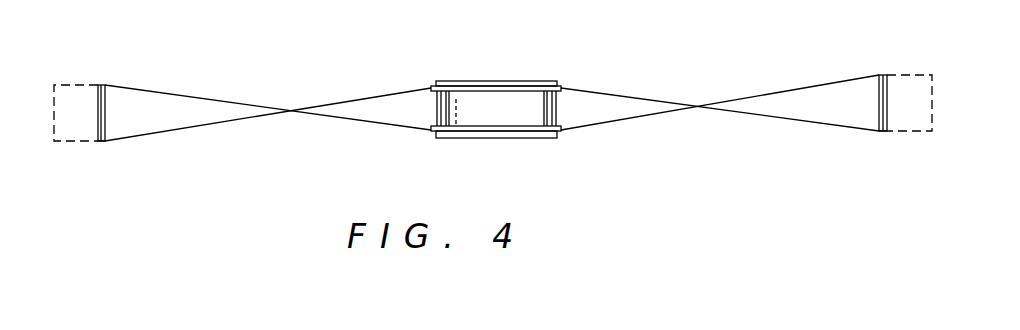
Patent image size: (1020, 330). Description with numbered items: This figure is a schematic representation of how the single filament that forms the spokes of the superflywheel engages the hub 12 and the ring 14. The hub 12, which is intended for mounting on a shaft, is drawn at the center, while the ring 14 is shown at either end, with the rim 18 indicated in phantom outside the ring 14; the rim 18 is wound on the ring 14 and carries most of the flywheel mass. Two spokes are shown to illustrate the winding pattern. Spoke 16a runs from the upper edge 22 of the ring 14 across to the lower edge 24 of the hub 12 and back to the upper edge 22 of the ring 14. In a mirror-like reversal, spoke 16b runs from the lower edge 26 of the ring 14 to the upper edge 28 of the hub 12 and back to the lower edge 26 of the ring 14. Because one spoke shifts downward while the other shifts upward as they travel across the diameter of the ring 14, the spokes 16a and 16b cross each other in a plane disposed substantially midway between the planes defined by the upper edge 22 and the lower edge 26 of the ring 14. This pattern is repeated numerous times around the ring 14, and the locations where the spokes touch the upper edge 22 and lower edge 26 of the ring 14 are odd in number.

The hub 12 is at (499, 94).
The ring 14 is at (120, 96).
The spoke 16a is at (218, 98).
The spoke 16b is at (227, 127).
The rim 18 is at (83, 83).
The upper edge of the ring 22 is at (102, 85).
The lower edge of the hub 24 is at (482, 138).
The lower edge of the ring 26 is at (102, 142).
The upper edge of the hub 28 is at (487, 80).